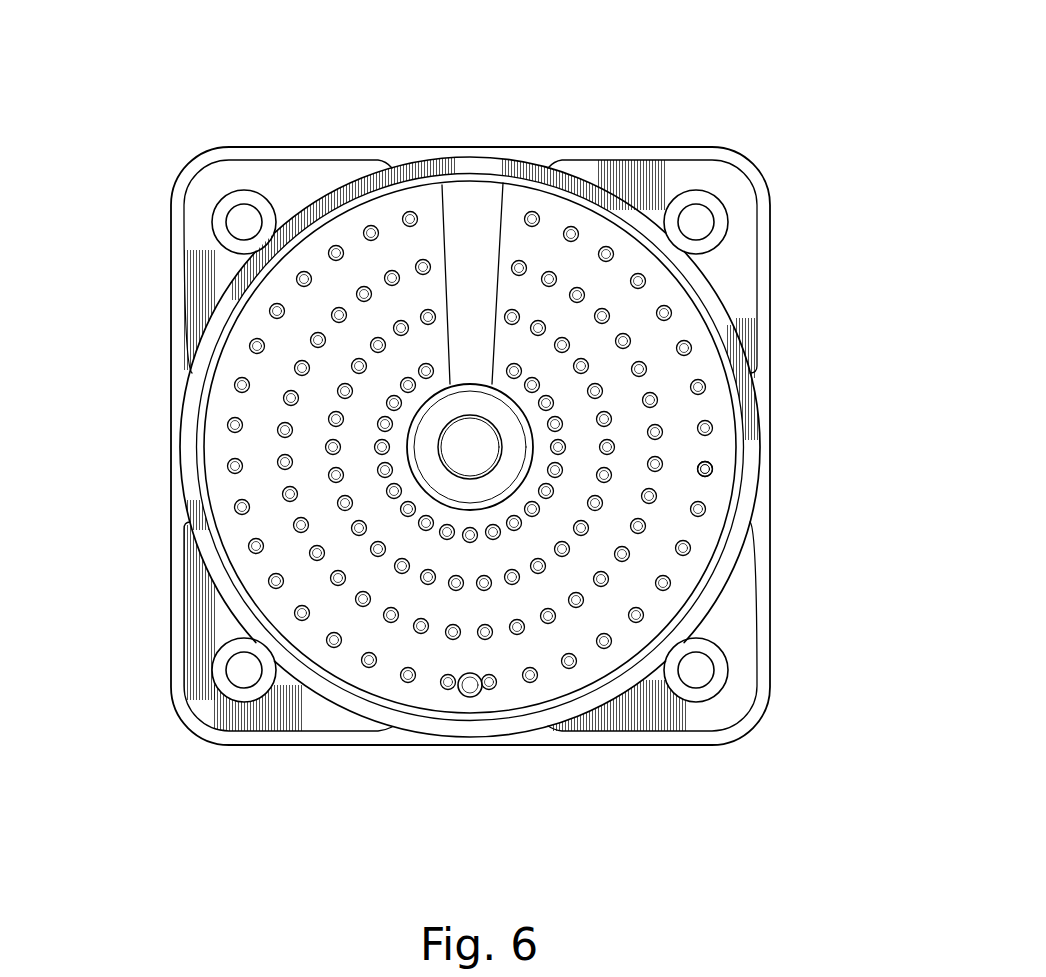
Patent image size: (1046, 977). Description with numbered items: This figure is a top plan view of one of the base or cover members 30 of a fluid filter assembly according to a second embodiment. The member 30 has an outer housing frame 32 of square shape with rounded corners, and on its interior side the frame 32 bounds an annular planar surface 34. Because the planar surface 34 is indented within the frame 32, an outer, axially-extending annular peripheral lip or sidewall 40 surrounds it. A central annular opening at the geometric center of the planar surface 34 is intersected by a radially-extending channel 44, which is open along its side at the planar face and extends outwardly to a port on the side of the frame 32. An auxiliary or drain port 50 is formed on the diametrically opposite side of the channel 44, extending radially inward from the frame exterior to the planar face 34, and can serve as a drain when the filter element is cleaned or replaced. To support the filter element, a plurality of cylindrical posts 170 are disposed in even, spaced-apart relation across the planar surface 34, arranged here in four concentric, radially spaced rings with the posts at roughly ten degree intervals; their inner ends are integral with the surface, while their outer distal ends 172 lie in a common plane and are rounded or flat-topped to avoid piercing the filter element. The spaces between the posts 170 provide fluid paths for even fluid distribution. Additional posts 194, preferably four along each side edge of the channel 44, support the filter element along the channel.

The base or cover member 30 is at (764, 86).
The outer housing frame 32 is at (766, 277).
The planar surface 34 is at (260, 322).
The peripheral lip or sidewall 40 is at (545, 190).
The radially-extending channel 44 is at (488, 227).
The auxiliary or drain port 50 is at (469, 697).
The posts 170 is at (389, 624).
The outer distal ends 172 is at (708, 464).
The posts along channel 194 is at (509, 365).